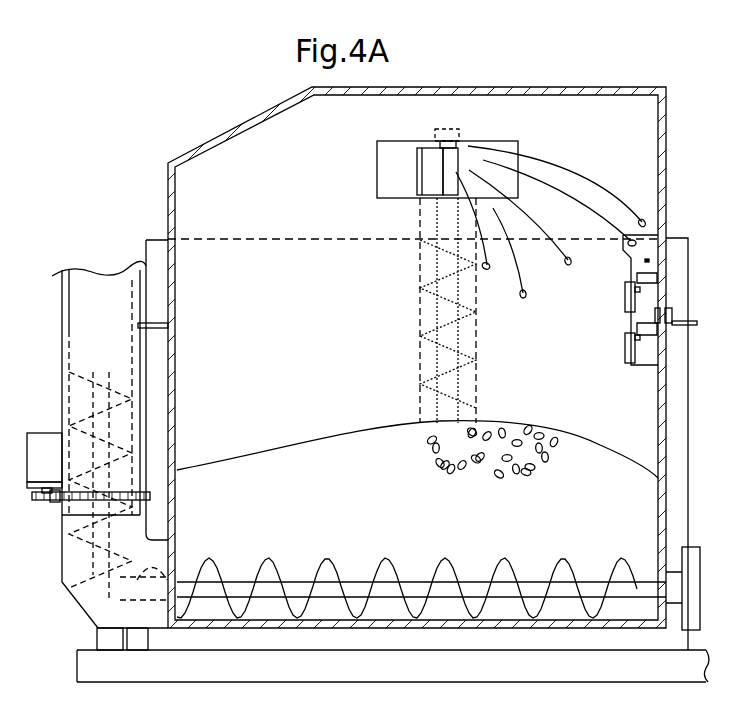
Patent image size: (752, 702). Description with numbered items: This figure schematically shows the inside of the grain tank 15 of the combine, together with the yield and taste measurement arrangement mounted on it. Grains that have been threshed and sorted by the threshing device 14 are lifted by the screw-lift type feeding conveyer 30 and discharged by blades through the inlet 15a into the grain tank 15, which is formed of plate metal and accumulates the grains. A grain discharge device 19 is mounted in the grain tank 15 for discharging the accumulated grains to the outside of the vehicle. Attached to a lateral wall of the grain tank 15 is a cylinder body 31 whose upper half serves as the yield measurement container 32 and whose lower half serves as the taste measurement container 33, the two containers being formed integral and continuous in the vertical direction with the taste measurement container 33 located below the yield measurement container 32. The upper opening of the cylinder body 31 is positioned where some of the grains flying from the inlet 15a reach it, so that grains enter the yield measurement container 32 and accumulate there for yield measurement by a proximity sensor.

The threshing device 14 is at (146, 240).
The grain tank 15 is at (258, 114).
The inlet 15a is at (384, 166).
The grain discharge device 19 is at (386, 558).
The feeding conveyer 30 is at (420, 312).
The cylinder body 31 is at (647, 368).
The yield measurement container 32 is at (632, 265).
The taste measurement container 33 is at (637, 317).